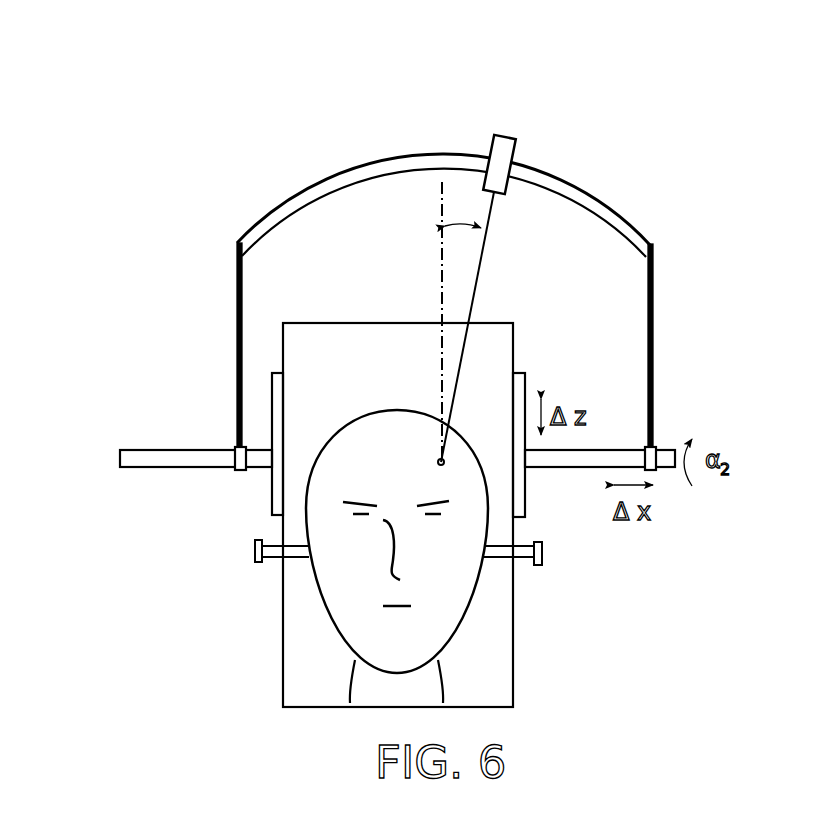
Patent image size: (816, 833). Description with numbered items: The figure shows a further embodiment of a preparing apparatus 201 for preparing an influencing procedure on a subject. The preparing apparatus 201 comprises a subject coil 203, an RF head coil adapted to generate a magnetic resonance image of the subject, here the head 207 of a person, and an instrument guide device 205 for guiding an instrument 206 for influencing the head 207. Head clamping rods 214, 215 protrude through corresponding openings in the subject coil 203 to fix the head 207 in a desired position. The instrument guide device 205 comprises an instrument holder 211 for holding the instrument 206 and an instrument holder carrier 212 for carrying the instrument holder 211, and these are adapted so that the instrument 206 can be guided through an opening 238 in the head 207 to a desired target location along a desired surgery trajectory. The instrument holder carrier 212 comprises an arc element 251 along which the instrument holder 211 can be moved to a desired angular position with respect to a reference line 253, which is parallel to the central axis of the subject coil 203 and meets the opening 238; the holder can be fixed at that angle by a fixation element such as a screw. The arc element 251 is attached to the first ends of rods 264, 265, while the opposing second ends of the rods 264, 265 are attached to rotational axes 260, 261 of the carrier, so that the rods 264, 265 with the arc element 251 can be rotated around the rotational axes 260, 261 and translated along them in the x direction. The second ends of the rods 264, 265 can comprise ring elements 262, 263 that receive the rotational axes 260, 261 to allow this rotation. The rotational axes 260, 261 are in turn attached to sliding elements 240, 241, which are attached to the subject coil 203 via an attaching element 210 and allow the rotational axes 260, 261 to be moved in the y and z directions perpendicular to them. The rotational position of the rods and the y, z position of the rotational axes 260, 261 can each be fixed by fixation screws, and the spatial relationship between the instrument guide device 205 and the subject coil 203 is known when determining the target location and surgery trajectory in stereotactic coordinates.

The preparing apparatus 201 is at (650, 99).
The subject coil 203 is at (514, 655).
The instrument guide device 205 is at (648, 221).
The instrument 206 is at (481, 261).
The head 207 is at (323, 608).
The attaching element 210 is at (276, 519).
The instrument holder 211 is at (510, 130).
The instrument holder carrier 212 is at (249, 192).
The head clamping rod 214 is at (254, 556).
The head clamping rod 215 is at (542, 555).
The opening 238 is at (436, 453).
The sliding element 240 is at (272, 387).
The sliding element 241 is at (527, 385).
The arc element 251 is at (374, 160).
The reference line 253 is at (441, 272).
The rotational axis 260 is at (123, 457).
The rotational axis 261 is at (661, 470).
The ring element 262 is at (236, 447).
The ring element 263 is at (656, 450).
The rod 264 is at (237, 287).
The rod 265 is at (652, 355).